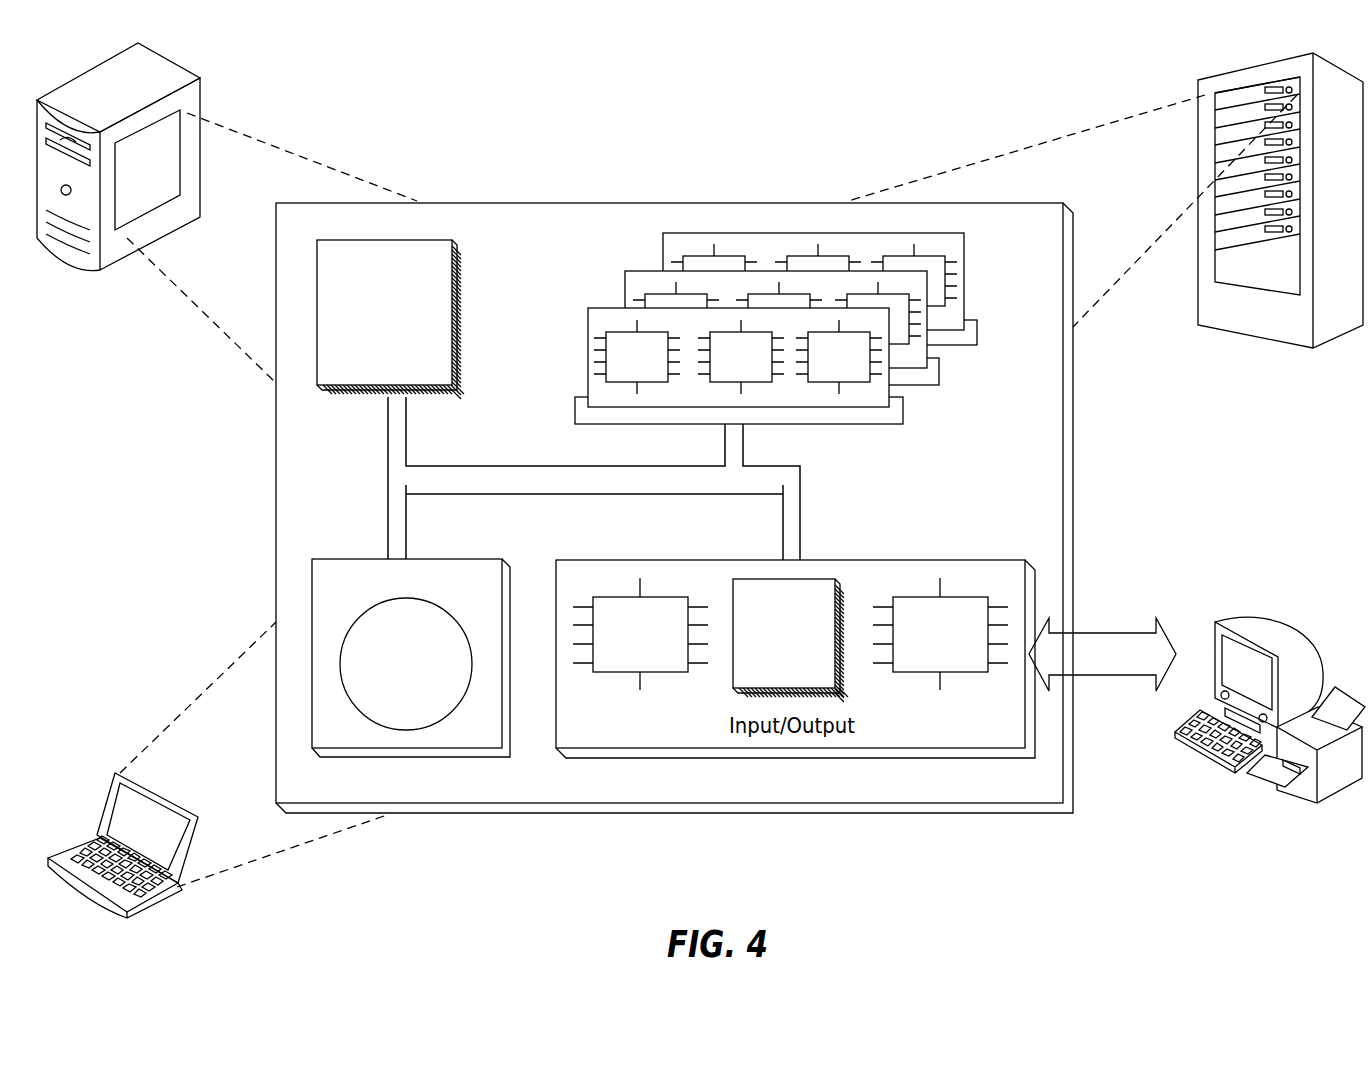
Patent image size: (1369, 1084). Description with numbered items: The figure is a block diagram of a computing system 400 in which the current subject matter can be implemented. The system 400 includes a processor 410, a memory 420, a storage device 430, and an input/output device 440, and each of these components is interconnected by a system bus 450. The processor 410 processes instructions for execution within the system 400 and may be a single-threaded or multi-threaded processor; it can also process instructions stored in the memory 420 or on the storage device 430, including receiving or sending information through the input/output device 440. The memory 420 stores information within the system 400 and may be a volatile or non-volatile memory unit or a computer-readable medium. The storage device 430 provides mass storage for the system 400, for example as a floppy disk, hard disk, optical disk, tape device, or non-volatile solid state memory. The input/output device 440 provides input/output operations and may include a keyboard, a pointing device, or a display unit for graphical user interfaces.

The system 400 is at (482, 120).
The processor 410 is at (442, 377).
The memory 420 is at (974, 385).
The storage device 430 is at (490, 739).
The input/output device 440 is at (1216, 635).
The system bus 450 is at (588, 485).